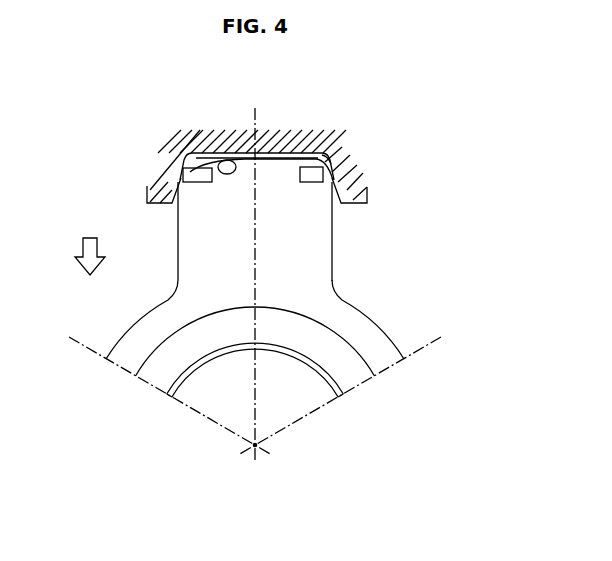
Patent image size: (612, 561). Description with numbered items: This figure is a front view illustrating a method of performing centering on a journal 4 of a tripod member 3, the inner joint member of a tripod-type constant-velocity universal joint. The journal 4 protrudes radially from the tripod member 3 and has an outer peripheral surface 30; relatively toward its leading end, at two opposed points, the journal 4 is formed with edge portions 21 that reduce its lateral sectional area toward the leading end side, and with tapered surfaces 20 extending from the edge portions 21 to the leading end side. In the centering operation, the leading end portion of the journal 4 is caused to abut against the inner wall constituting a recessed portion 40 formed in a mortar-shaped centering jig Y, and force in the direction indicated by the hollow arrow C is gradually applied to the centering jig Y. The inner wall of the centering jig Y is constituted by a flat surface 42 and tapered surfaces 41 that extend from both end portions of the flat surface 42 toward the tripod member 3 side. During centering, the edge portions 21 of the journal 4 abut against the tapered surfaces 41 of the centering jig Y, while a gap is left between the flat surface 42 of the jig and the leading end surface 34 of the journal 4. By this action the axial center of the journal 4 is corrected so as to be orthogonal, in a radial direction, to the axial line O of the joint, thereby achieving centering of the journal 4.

The tripod member 3 is at (345, 377).
The journal 4 is at (205, 250).
The tapered surface 20 is at (187, 167).
The edge portion 21 is at (178, 183).
The outer peripheral surface 30 is at (336, 254).
The leading end surface 34 is at (296, 157).
The recessed portion 40 is at (213, 160).
The tapered surface 41 is at (339, 205).
The flat surface 42 is at (318, 157).
The centering jig Y is at (342, 154).
The hollow arrow C is at (83, 247).
The axial line of the joint O is at (255, 397).